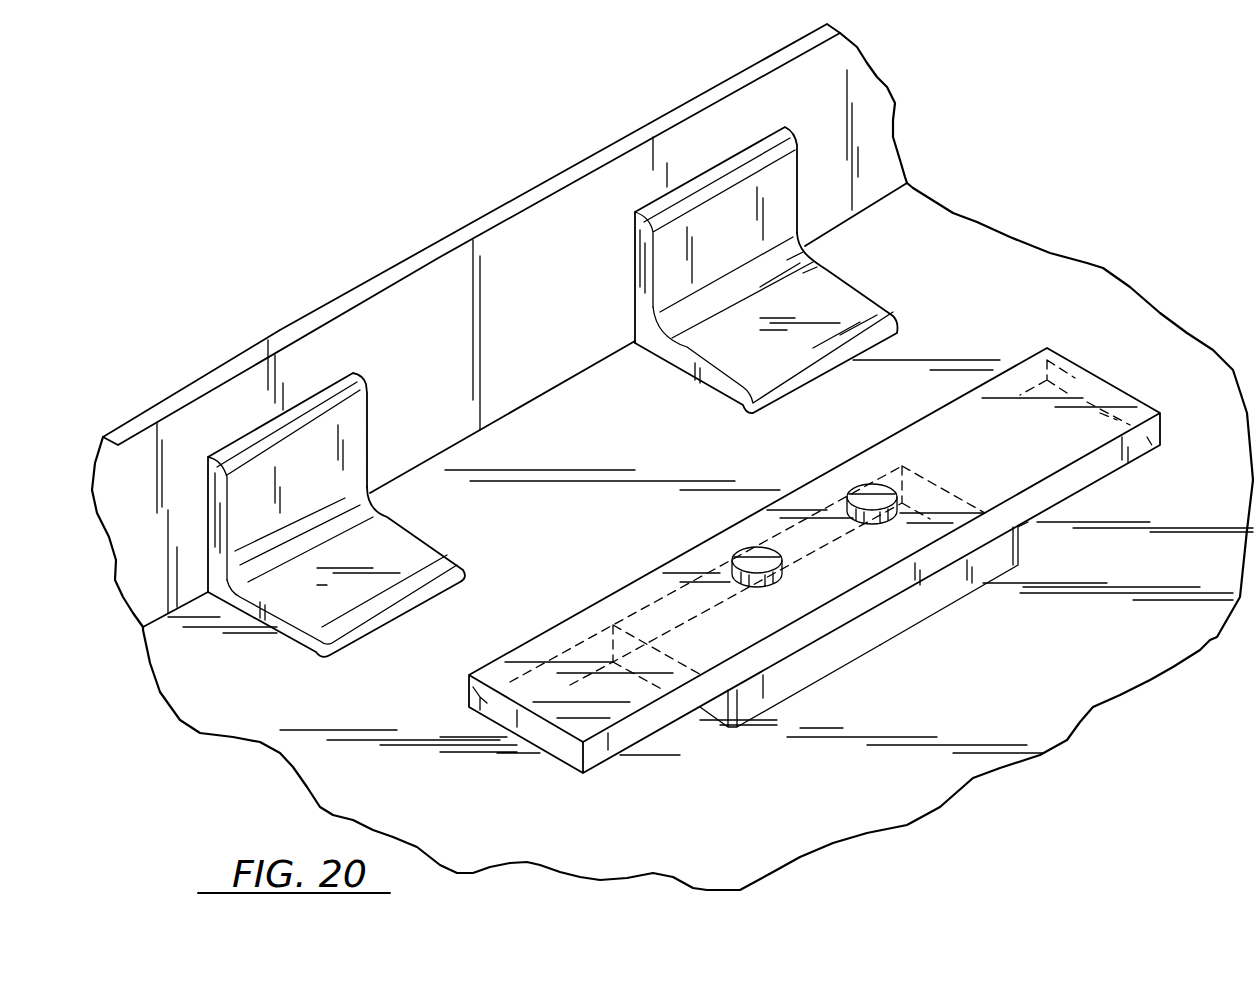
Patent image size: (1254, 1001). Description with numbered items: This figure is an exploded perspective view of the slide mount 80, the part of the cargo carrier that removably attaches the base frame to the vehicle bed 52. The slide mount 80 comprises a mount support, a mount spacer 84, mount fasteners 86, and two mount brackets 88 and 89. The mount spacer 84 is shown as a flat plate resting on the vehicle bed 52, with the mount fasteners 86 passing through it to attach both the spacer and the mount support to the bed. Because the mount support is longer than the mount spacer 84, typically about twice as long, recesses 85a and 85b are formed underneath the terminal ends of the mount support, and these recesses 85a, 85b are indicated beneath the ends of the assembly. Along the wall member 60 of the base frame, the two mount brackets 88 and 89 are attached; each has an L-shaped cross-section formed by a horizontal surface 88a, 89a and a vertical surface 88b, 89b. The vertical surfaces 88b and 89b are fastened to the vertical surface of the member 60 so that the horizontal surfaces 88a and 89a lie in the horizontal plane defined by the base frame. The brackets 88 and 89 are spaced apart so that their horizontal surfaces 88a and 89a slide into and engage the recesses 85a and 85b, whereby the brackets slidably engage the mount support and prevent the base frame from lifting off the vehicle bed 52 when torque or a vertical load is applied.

The vehicle bed 52 is at (160, 692).
The wall member of the base frame 60 is at (377, 276).
The slide mount 80 is at (992, 201).
The mount spacer 84 is at (880, 640).
The recess 85a is at (680, 733).
The recess 85b is at (1110, 487).
The mount fasteners 86 is at (757, 553).
The mount bracket 88 is at (370, 482).
The horizontal surface 88a is at (418, 605).
The vertical surface 88b is at (328, 392).
The mount bracket 89 is at (828, 264).
The horizontal surface 89a is at (888, 352).
The vertical surface 89b is at (728, 158).